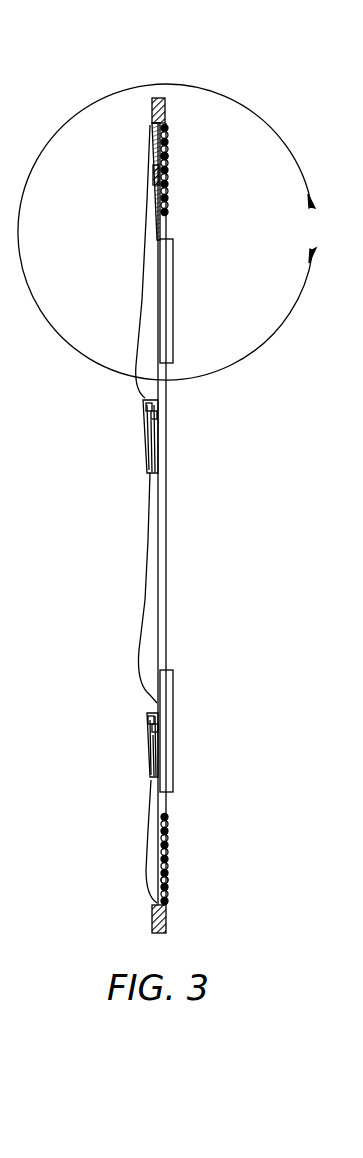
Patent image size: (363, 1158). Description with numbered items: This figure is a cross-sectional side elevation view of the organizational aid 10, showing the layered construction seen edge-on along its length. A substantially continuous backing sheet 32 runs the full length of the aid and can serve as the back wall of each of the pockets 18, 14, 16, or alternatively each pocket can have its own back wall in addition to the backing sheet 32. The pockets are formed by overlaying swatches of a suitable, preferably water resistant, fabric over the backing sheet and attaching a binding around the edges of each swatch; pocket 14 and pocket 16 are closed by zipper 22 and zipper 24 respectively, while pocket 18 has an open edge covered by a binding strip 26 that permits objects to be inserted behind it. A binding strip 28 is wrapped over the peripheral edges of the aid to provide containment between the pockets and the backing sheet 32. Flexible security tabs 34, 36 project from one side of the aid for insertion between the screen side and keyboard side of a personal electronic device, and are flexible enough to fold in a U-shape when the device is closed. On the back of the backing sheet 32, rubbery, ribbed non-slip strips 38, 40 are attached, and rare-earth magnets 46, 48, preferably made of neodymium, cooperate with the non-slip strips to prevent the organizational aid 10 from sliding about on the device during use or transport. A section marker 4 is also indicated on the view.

The organizational aid 10 is at (110, 56).
The section line 4 is at (167, 232).
The pocket 14 is at (143, 618).
The pocket 16 is at (148, 868).
The pocket 18 is at (140, 312).
The zipper 22 is at (152, 420).
The zipper 24 is at (152, 726).
The binding strip 26 is at (153, 170).
The binding strip 28 is at (166, 104).
The backing sheet 32 is at (158, 534).
The security tab 34 is at (173, 280).
The security tab 36 is at (166, 683).
The non-slip strip 38 is at (172, 150).
The non-slip strip 40 is at (163, 840).
The rare-earth magnet 46 is at (160, 156).
The rare-earth magnet 48 is at (160, 878).